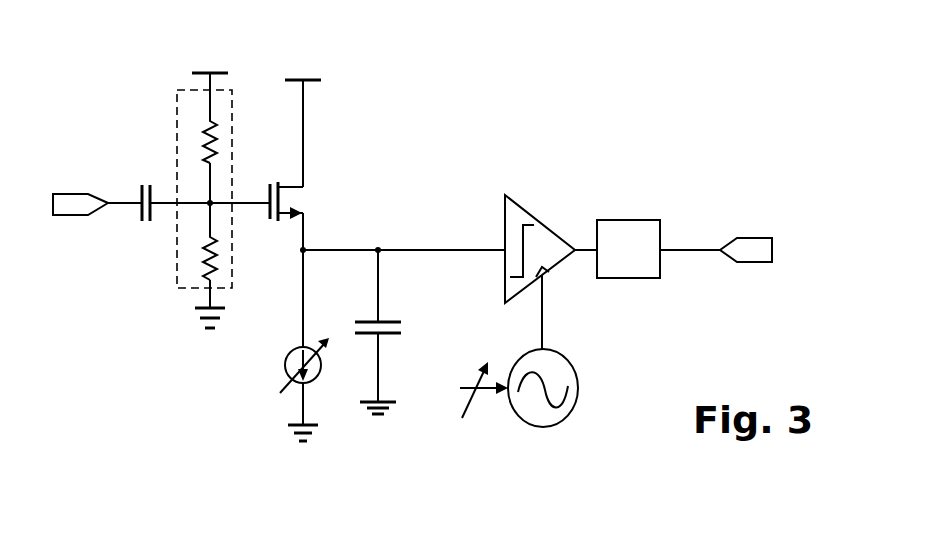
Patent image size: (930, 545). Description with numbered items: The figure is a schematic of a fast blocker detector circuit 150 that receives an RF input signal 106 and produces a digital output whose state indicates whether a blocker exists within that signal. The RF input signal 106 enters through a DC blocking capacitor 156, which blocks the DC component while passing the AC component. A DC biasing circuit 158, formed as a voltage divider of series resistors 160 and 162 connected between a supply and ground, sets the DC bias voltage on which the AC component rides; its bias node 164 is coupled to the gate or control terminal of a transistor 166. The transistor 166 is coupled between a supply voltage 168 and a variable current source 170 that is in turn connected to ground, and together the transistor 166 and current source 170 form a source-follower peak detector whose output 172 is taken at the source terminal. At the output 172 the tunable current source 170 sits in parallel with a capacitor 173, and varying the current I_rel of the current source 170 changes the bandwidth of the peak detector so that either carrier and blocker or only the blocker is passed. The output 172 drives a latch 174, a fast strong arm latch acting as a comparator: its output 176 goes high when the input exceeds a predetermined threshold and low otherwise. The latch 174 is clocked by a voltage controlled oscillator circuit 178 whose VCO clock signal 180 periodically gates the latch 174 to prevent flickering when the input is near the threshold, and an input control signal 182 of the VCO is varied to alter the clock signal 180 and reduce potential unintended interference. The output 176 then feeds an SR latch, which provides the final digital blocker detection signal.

The blocker detector circuit 150 is at (652, 63).
The RF input signal 106 is at (78, 215).
The DC blocking capacitor 156 is at (149, 185).
The DC biasing circuit 158 is at (177, 102).
The series resistor 160 is at (211, 129).
The series resistor 162 is at (207, 274).
The bias node 164 is at (211, 208).
The transistor 166 is at (307, 198).
The supply voltage 168 is at (303, 80).
The variable current source 170 is at (286, 370).
The output of the peak detector 172 is at (434, 249).
The capacitor 173 is at (391, 317).
The latch 174 is at (533, 218).
The output of the latch 176 is at (576, 253).
The voltage controlled oscillator circuit 178 is at (578, 383).
The VCO clock signal 180 is at (543, 322).
The input control signal 182 is at (480, 392).